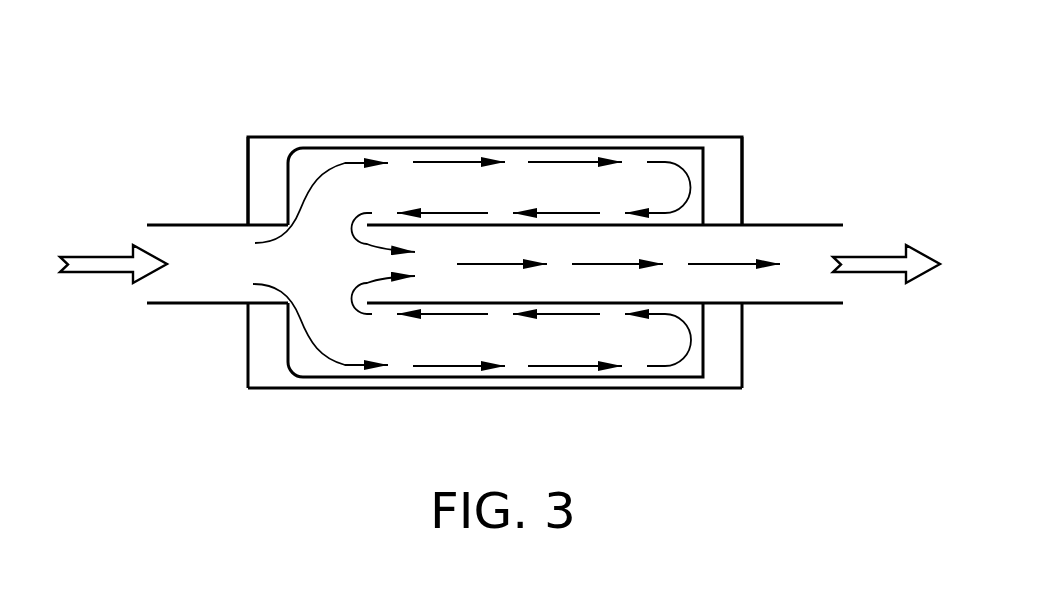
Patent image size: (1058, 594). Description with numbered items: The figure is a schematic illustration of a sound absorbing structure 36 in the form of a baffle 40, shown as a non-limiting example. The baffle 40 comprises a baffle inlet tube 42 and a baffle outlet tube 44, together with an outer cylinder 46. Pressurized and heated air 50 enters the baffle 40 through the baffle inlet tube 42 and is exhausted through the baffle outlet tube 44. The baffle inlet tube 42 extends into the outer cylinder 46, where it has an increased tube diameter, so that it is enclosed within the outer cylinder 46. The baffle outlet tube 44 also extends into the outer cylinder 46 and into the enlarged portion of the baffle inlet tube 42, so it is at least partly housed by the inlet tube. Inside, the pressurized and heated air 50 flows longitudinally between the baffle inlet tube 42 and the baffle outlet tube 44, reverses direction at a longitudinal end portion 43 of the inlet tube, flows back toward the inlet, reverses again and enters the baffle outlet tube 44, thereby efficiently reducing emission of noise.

The sound absorbing structure 36 is at (609, 114).
The baffle 40 is at (471, 114).
The baffle inlet tube 42 is at (192, 224).
The longitudinal end portion 43 is at (693, 187).
The baffle outlet tube 44 is at (788, 224).
The outer cylinder 46 is at (668, 388).
The pressurized and heated air 50 is at (95, 256).